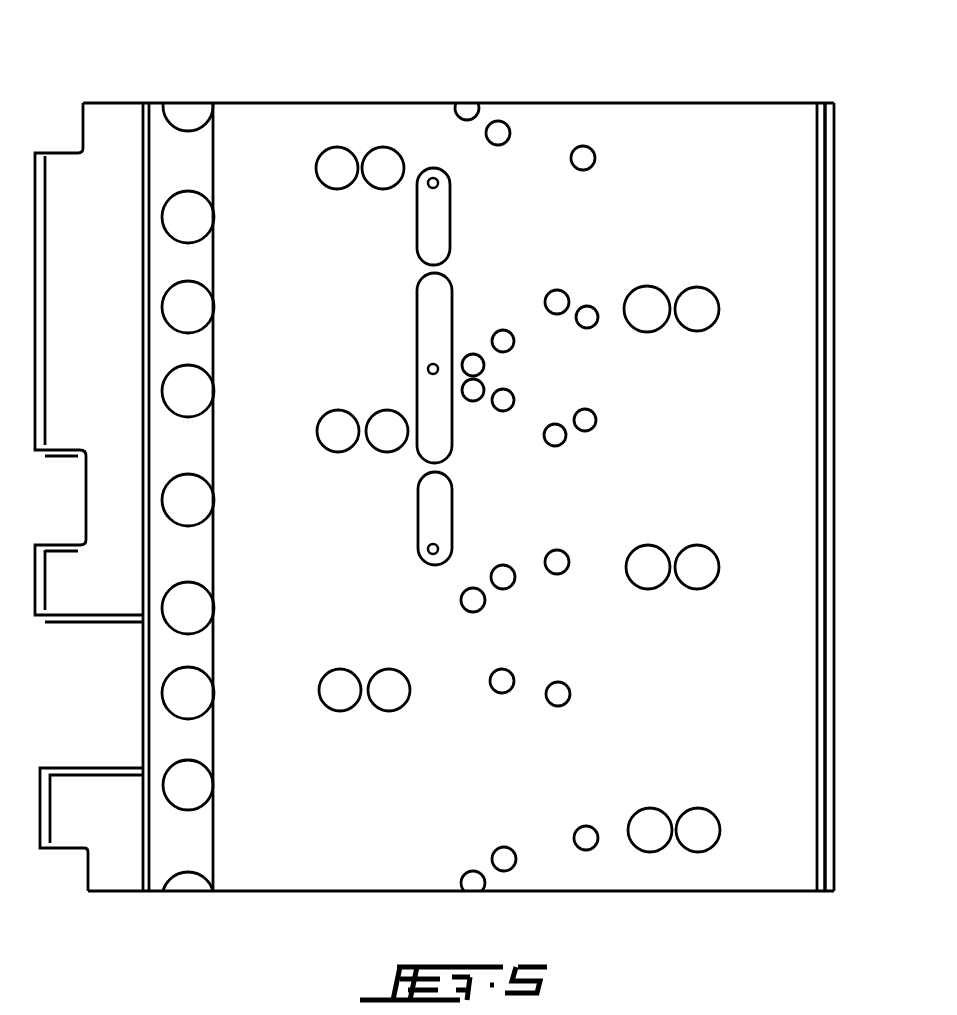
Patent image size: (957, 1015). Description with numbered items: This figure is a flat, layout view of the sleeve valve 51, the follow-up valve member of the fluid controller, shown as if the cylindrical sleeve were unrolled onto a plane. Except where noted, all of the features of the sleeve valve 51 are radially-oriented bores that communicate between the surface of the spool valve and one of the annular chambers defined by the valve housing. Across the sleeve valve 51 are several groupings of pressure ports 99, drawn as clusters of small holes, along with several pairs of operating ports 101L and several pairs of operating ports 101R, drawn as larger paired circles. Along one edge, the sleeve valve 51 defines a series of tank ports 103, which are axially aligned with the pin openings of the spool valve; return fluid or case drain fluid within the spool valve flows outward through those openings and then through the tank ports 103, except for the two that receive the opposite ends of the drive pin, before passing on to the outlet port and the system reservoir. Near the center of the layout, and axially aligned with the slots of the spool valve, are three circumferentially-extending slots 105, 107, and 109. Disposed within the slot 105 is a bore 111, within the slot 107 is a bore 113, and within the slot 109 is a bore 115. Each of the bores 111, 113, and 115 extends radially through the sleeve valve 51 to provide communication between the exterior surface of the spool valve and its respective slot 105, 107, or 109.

The sleeve valve 51 is at (792, 92).
The pressure ports 99 is at (533, 320).
The operating ports 101L is at (365, 412).
The operating ports 101R is at (676, 290).
The tank ports 103 is at (203, 316).
The circumferentially-extending slot 105 is at (426, 313).
The circumferentially-extending slot 107 is at (430, 227).
The circumferentially-extending slot 109 is at (430, 513).
The bore 111 is at (430, 366).
The bore 113 is at (436, 178).
The bore 115 is at (426, 552).